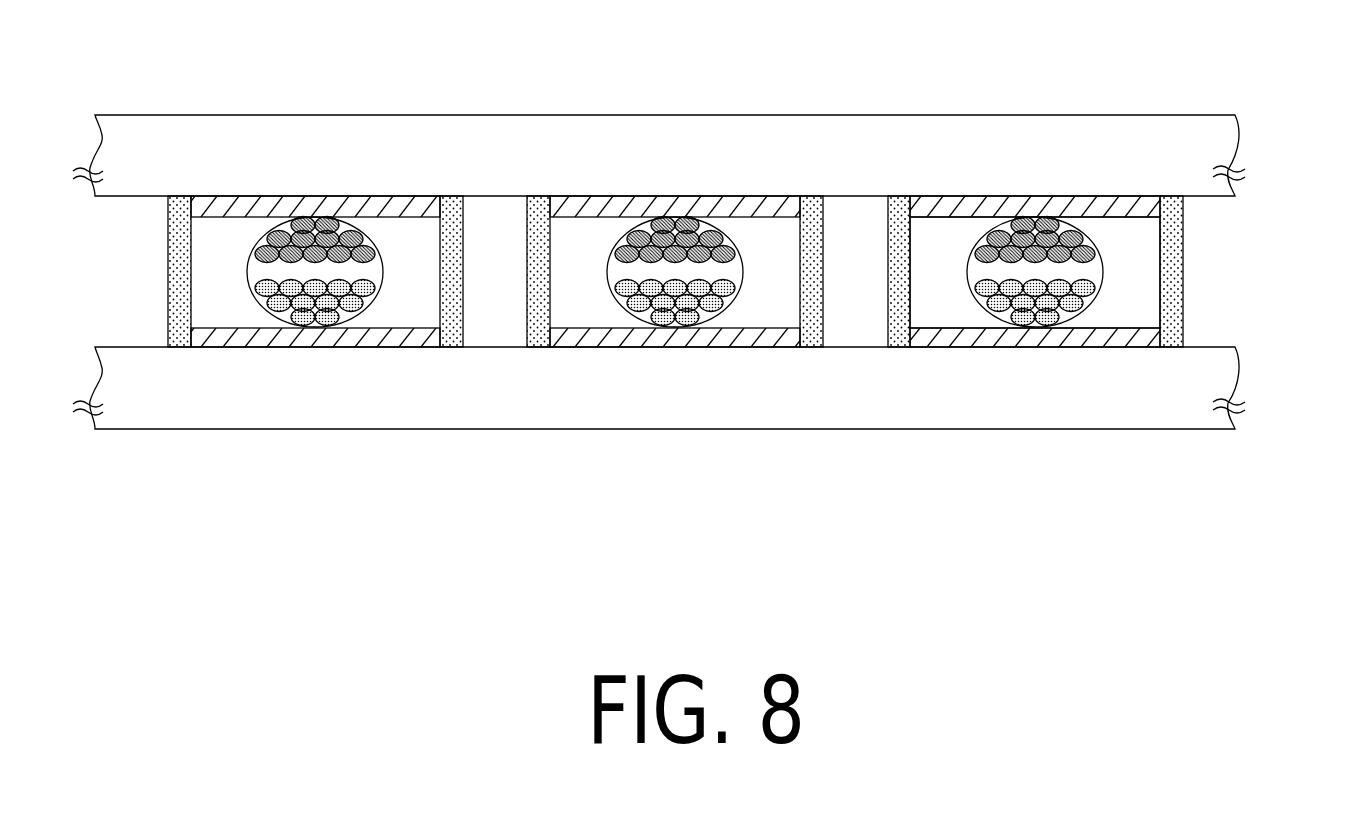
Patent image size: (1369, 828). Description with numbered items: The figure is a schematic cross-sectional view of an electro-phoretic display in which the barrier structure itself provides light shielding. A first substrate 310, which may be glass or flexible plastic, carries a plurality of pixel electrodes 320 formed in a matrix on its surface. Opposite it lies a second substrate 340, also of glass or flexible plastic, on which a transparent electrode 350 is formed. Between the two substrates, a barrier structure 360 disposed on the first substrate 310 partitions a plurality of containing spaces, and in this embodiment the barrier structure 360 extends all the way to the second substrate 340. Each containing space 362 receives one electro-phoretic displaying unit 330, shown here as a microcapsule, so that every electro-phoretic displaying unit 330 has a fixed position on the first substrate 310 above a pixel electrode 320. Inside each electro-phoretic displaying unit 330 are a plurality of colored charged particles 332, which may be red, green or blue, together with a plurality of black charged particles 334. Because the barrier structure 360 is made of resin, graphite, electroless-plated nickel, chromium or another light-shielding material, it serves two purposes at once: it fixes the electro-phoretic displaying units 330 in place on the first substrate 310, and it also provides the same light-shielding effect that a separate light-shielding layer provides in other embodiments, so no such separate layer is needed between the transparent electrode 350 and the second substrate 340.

The first substrate 310 is at (1223, 387).
The pixel electrodes 320 is at (1080, 340).
The electro-phoretic displaying unit 330 is at (1095, 272).
The colored charged particles 332 is at (1020, 326).
The black charged particles 334 is at (1050, 217).
The second substrate 340 is at (1223, 139).
The transparent electrode 350 is at (1120, 200).
The barrier structure 360 is at (1180, 305).
The cell space 362 is at (940, 250).